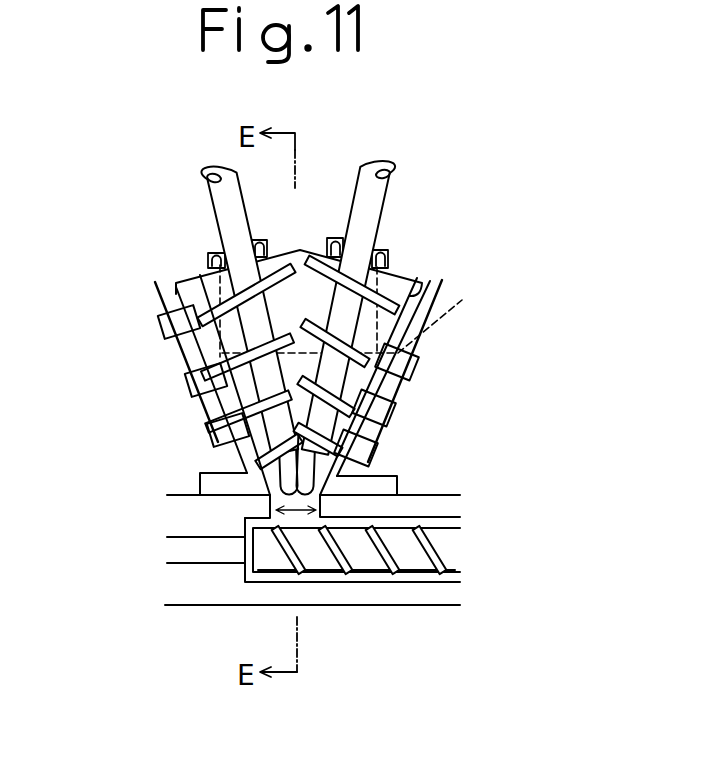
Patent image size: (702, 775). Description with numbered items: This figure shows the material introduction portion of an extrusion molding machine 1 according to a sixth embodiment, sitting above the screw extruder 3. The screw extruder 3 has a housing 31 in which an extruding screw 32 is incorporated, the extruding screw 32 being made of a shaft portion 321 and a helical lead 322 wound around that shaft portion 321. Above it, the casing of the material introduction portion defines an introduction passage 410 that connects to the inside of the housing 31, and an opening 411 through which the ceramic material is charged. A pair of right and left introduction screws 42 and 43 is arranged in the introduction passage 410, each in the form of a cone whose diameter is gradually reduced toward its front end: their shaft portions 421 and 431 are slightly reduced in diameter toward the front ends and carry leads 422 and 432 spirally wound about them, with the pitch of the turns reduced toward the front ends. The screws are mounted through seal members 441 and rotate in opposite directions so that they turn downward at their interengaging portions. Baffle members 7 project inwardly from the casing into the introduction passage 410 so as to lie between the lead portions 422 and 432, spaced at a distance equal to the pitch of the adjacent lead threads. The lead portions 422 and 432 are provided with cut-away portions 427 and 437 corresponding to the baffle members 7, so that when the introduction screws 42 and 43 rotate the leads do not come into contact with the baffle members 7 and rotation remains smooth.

The extrusion molding machine 1 is at (146, 626).
The screw extruder 3 is at (380, 605).
The baffle members 7 is at (168, 298).
The housing 31 is at (340, 606).
The extruding screw 32 is at (414, 556).
The shaft portion 321 is at (421, 566).
The helical lead 322 is at (438, 543).
The introduction screw 42 is at (392, 188).
The introduction screw 43 is at (214, 215).
The introduction passage 410 is at (414, 280).
The opening 411 is at (369, 311).
The shaft portion 421 is at (398, 406).
The lead 422 is at (398, 478).
The cut-away portion 427 is at (400, 348).
The shaft portion 431 is at (227, 177).
The lead 432 is at (207, 462).
The cut-away portion 437 is at (215, 293).
The seal members 441 is at (382, 250).